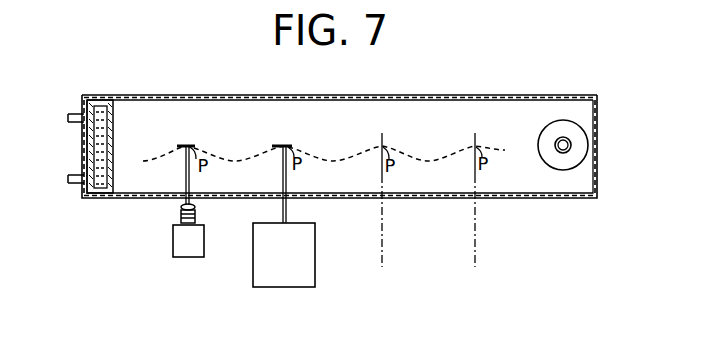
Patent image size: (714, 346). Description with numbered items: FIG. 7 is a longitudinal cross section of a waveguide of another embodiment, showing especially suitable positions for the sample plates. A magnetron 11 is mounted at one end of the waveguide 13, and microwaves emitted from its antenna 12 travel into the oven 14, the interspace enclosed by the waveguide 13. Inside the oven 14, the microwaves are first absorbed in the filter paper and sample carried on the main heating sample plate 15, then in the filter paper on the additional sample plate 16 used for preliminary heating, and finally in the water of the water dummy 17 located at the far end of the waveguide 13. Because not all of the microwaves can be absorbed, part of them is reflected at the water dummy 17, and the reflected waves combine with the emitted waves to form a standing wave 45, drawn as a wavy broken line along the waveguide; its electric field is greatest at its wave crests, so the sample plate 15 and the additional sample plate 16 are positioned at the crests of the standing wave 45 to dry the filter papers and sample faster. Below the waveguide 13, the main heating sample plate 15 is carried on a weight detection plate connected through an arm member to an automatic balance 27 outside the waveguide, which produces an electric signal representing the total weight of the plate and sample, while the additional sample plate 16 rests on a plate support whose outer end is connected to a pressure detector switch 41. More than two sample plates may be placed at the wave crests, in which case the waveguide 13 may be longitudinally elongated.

The magnetron 11 is at (588, 156).
The antenna 12 is at (562, 140).
The waveguide 13 is at (433, 95).
The oven 14 is at (242, 112).
The main heating sample plate 15 is at (283, 146).
The additional sample plate 16 is at (186, 146).
The water dummy 17 is at (82, 153).
The automatic balance 27 is at (293, 282).
The pressure detector switch 41 is at (192, 257).
The web line 45 is at (333, 159).